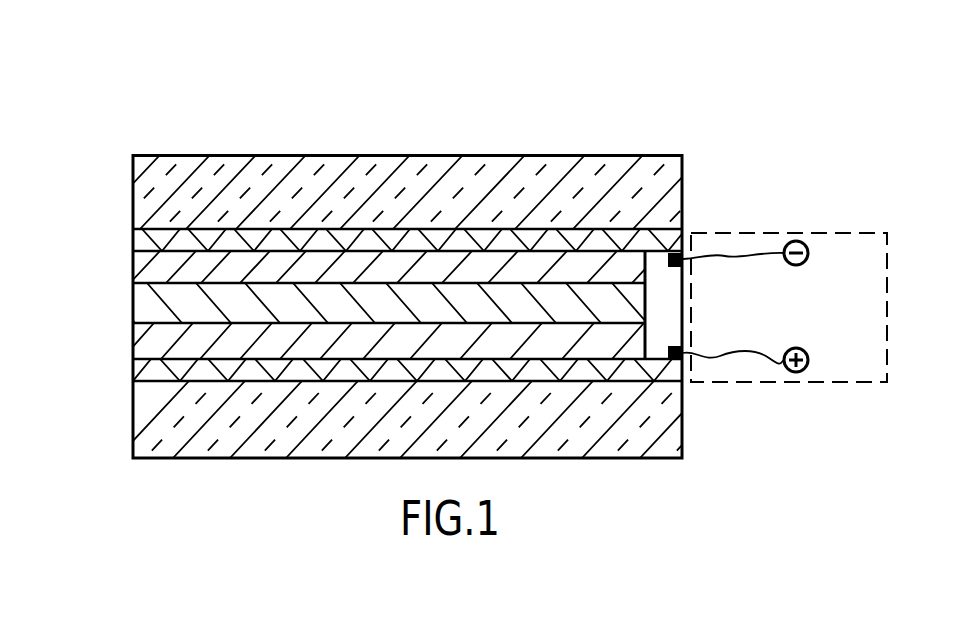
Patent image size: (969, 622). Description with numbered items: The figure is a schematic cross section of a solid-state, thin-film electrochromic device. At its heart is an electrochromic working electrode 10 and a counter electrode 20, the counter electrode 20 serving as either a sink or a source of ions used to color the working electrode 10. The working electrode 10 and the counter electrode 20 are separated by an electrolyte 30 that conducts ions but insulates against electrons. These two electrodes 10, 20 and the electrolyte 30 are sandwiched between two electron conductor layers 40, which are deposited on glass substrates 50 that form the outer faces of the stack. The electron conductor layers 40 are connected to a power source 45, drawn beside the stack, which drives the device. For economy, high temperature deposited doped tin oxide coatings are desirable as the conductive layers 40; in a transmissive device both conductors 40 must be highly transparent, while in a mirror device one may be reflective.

The electrochromic working electrode 10 is at (141, 272).
The counter electrode 20 is at (150, 340).
The electrolyte 30 is at (150, 303).
The electron conductor layer 40 is at (143, 243).
The power source 45 is at (843, 257).
The substrate 50 is at (200, 174).